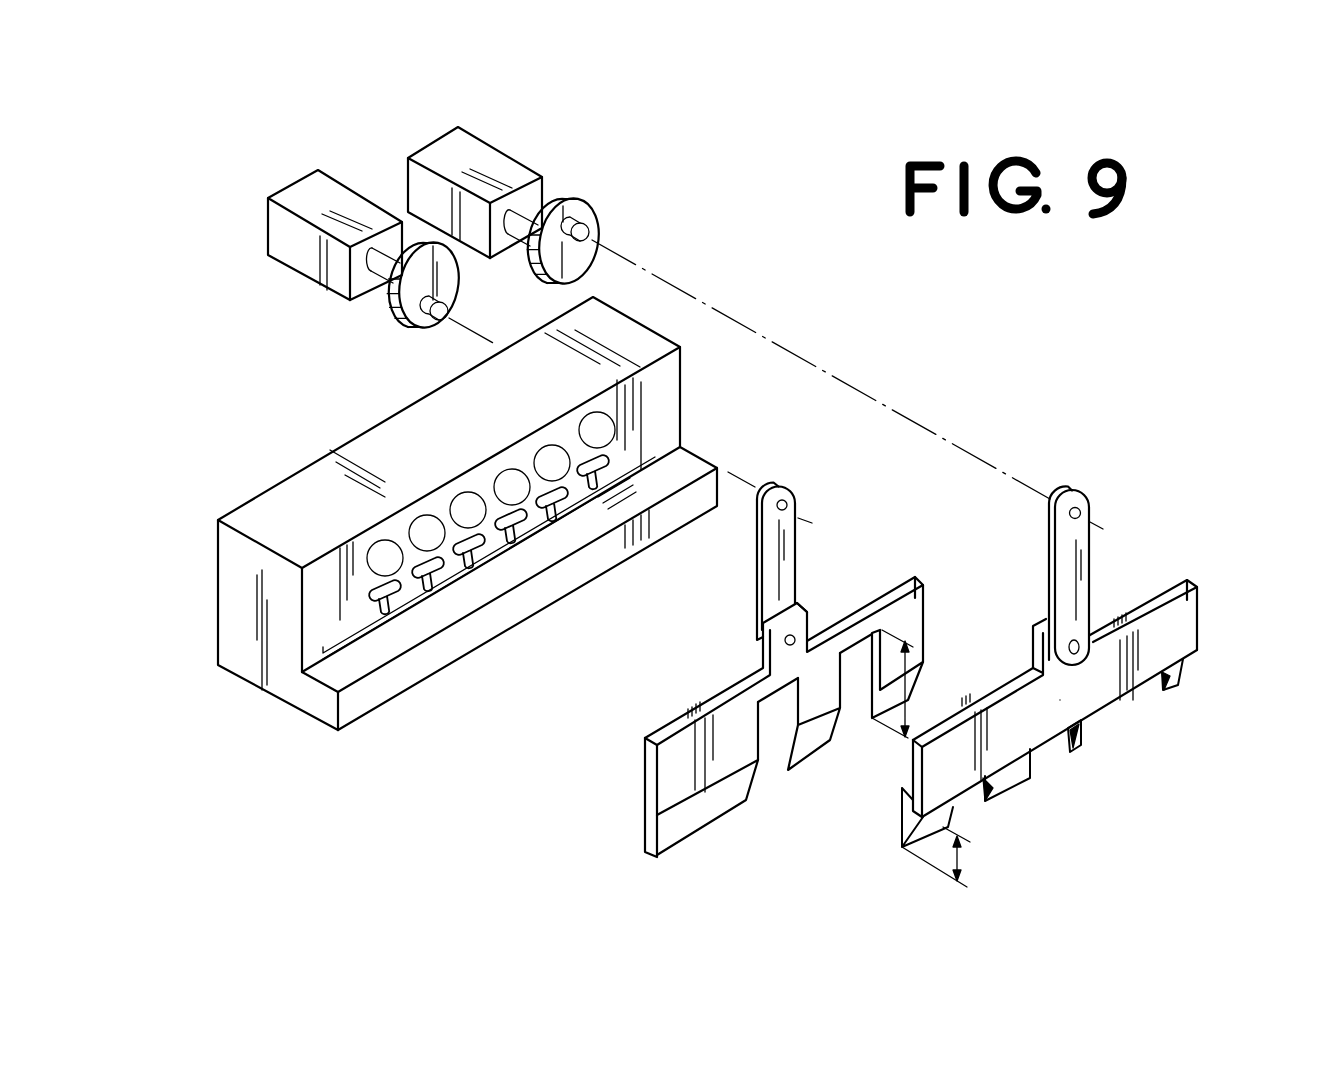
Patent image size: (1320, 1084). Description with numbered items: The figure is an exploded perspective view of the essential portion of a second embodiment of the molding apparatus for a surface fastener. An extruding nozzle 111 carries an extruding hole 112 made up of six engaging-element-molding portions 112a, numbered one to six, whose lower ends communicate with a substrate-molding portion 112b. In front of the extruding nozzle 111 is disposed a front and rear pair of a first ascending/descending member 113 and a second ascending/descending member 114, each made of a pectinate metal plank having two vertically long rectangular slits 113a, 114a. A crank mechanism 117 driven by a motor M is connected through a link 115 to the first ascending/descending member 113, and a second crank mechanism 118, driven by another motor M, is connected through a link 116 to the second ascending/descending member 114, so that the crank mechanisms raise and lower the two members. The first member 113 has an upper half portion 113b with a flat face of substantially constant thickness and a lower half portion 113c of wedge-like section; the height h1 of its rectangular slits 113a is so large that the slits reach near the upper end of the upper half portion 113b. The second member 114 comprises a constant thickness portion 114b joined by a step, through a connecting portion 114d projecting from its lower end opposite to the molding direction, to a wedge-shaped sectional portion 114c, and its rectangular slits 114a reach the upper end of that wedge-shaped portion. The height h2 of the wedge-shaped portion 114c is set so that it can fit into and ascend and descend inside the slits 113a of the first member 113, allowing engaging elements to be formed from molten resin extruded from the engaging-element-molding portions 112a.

The motor M is at (347, 200).
The extruding nozzle 111 is at (292, 498).
The extruding hole 112 is at (493, 604).
The engaging-element-molding portions 112a is at (508, 528).
The substrate-molding portion 112b is at (451, 582).
The first ascending/descending member 113 is at (717, 733).
The rectangular slits 113a is at (852, 755).
The upper half portion 113b is at (645, 763).
The lower half portion 113c is at (645, 855).
The second ascending/descending member 114 is at (1023, 692).
The rectangular slits 114a is at (1050, 723).
The constant thickness portion 114b is at (1050, 723).
The wedge-shaped sectional portion 114c is at (1147, 697).
The connecting portion 114d is at (907, 797).
The link 115 is at (782, 548).
The link 116 is at (1070, 543).
The crank mechanism 117 is at (398, 318).
The crank mechanism 118 is at (568, 200).
The height of the rectangular slits h1 is at (908, 686).
The height of the wedge-shaped portion h2 is at (957, 860).